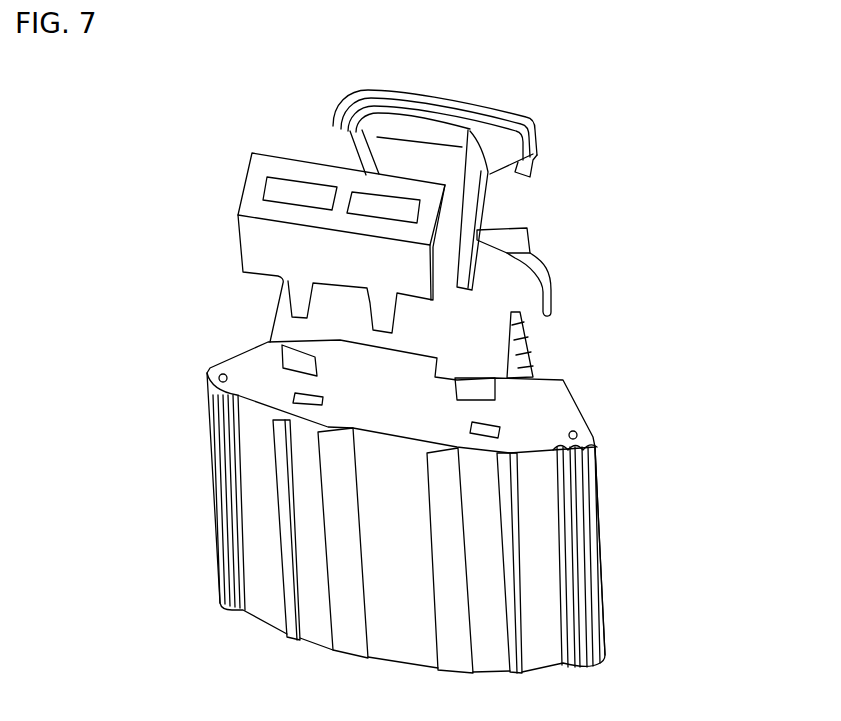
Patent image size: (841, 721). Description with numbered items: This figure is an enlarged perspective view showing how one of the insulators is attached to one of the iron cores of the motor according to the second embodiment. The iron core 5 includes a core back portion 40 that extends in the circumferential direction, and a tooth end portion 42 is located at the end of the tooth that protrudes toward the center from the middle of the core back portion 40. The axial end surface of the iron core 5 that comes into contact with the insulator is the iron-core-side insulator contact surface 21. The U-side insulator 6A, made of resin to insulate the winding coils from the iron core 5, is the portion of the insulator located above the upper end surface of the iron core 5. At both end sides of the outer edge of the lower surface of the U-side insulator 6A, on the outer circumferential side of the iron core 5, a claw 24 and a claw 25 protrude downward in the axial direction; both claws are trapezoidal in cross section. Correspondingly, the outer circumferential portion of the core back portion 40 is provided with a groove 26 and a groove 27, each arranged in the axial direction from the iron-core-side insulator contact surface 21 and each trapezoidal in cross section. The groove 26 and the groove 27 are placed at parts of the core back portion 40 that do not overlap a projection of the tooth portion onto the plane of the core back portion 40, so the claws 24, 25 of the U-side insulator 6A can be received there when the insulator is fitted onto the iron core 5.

The iron core 5 is at (258, 532).
The U-side insulator 6A is at (447, 160).
The iron-core-side insulator contact surface 21 is at (527, 417).
The claw 24 is at (265, 330).
The claw 25 is at (477, 388).
The groove 26 is at (307, 442).
The groove 27 is at (557, 472).
The core back portion 40 is at (603, 583).
The tooth end portion 42 is at (513, 237).